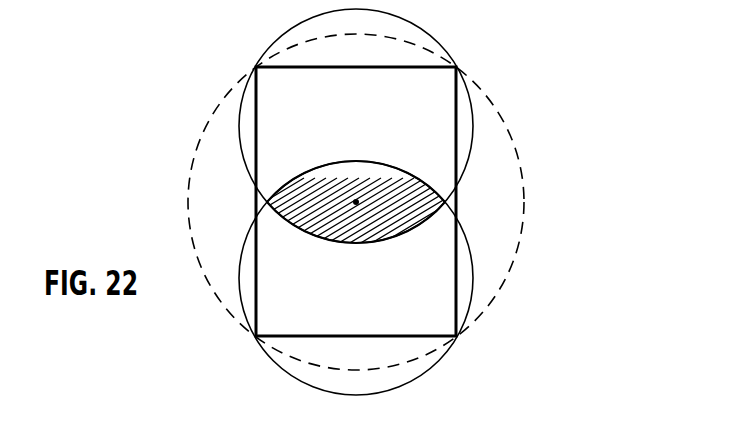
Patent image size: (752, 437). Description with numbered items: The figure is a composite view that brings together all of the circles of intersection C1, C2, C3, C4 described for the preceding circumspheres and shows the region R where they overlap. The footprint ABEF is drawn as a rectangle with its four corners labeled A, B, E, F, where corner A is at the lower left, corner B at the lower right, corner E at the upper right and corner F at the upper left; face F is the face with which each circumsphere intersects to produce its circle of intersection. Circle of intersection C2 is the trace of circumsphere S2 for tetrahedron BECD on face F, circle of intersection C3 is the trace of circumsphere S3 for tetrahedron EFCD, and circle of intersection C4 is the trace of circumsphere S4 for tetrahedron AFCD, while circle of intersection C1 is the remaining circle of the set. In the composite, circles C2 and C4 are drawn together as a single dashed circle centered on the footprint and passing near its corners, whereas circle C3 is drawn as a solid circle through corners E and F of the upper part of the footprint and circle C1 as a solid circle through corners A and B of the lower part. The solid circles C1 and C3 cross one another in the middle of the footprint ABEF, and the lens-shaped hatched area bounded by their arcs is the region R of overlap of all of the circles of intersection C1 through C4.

The footprint vertex A is at (283, 280).
The footprint vertex B is at (426, 280).
The footprint vertex E is at (426, 126).
The face F is at (283, 124).
The region of overlap R is at (353, 175).
The circle of intersection C1 is at (473, 274).
The circle of intersection C2 is at (397, 202).
The circle of intersection C3 is at (469, 156).
The circle of intersection C4 is at (487, 99).